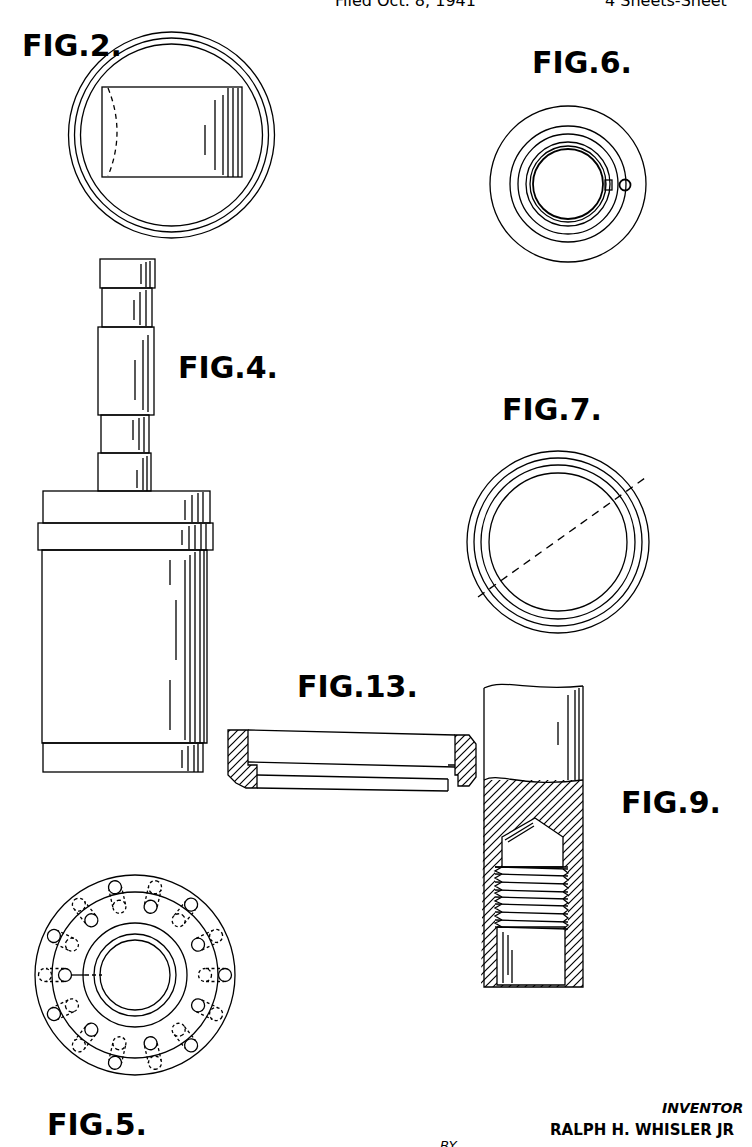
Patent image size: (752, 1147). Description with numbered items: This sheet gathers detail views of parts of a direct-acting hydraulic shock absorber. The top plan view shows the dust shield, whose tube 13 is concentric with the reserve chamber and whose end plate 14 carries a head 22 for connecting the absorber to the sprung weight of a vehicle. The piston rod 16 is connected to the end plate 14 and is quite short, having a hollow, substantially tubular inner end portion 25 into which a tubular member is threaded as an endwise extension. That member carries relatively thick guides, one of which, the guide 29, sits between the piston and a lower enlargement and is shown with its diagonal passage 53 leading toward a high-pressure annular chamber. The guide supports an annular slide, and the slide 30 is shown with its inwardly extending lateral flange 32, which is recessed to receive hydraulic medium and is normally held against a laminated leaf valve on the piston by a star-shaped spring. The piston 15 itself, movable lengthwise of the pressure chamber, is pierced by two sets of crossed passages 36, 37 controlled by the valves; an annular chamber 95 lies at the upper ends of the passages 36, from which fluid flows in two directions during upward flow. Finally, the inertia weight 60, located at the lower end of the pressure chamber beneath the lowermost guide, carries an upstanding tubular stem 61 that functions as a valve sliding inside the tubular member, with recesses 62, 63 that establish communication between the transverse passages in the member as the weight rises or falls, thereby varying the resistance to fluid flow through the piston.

In FIG. 2, the end plate 14 is at (227, 70).
In FIG. 2, the head 22 is at (217, 100).
In FIG. 6, the guide 29 is at (633, 155).
In FIG. 6, the passage 53 is at (631, 185).
In FIG. 4, the tubular stem 61 is at (155, 278).
In FIG. 4, the recess 62 is at (152, 312).
In FIG. 4, the recess 63 is at (145, 432).
In FIG. 4, the inertia weight 60 is at (182, 658).
In FIG. 7, the annular slide 30 is at (600, 545).
In FIG. 13, the annular slide 30 is at (356, 752).
In FIG. 7, the tube 13 is at (565, 541).
In FIG. 13, the lateral flange 32 is at (446, 783).
In FIG. 9, the piston rod 16 is at (573, 732).
In FIG. 9, the tubular inner end portion 25 is at (580, 940).
In FIG. 5, the piston 15 is at (225, 954).
In FIG. 5, the crossed passages 36 is at (157, 907).
In FIG. 5, the annular chamber 95 is at (190, 930).
In FIG. 5, the crossed passages 37 is at (218, 928).